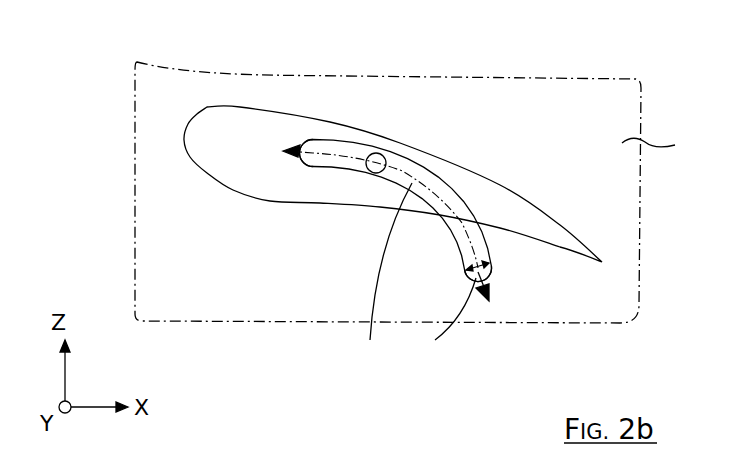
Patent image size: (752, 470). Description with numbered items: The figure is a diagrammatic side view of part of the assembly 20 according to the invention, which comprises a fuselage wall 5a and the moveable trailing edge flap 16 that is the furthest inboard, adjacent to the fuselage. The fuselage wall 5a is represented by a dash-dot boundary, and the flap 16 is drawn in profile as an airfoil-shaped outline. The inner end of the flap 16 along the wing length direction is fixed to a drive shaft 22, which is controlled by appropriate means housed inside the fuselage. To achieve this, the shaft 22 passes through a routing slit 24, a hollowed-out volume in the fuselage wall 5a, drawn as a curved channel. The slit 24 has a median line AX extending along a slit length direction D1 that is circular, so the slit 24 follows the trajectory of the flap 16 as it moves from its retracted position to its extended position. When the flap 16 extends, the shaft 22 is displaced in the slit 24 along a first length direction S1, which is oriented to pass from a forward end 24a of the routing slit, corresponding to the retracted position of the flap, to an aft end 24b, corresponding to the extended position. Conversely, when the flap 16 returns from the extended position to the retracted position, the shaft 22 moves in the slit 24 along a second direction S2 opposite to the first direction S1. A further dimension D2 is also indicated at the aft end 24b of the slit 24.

The assembly 20 is at (577, 72).
The fuselage wall 5a is at (665, 135).
The moveable trailing edge flap 16 is at (209, 178).
The routing slit 24 is at (457, 200).
The forward end of the routing slit 24a is at (307, 138).
The aft end of the routing slit 24b is at (492, 270).
The drive shaft 22 is at (378, 155).
The median line AX is at (340, 156).
The first length direction S1 is at (499, 297).
The second direction S2 is at (281, 166).
The slit length direction D1 is at (382, 277).
The second diameter D2 is at (449, 323).